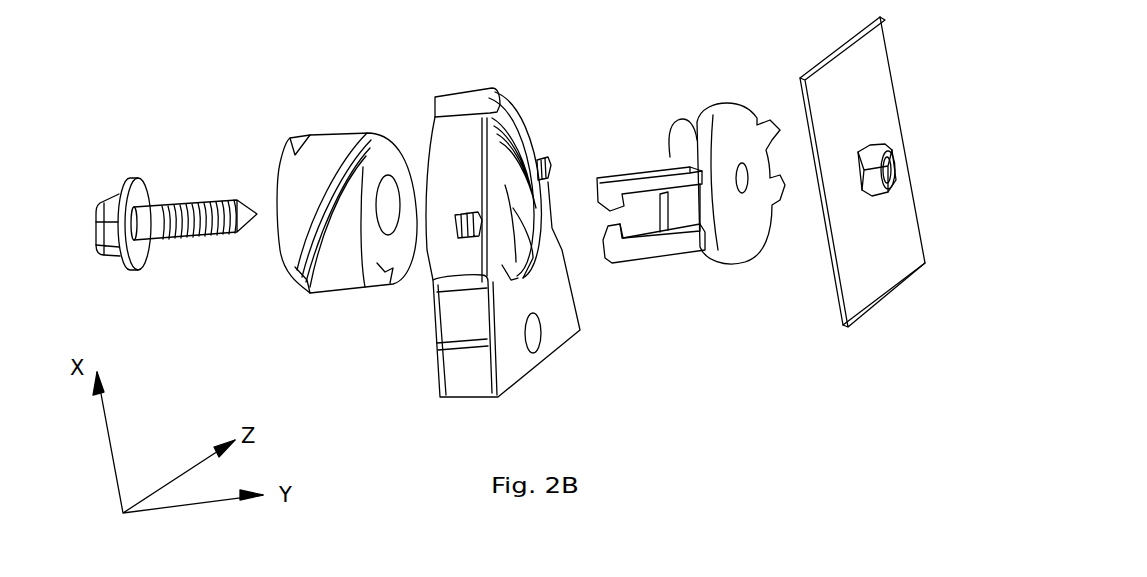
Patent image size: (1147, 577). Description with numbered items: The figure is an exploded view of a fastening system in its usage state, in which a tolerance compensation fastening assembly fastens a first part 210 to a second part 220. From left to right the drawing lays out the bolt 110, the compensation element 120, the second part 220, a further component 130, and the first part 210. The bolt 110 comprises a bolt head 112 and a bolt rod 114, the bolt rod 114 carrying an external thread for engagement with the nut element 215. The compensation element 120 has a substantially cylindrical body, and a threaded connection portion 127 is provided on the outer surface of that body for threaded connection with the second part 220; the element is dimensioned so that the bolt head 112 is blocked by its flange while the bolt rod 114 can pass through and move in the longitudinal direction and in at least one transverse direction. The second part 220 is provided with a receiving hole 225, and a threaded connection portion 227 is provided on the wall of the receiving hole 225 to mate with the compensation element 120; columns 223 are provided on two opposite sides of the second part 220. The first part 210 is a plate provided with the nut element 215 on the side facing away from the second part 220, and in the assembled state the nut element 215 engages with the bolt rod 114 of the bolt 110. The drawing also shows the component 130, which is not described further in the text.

The bolt 110 is at (179, 178).
The bolt head 112 is at (120, 192).
The bolt rod 114 is at (172, 162).
The compensation element 120 is at (331, 195).
The threaded connection portion 127 is at (300, 272).
The second part 220 is at (517, 220).
The columns 223 is at (567, 161).
The receiving hole 225 is at (540, 264).
The threaded connection portion 227 is at (525, 153).
The second clamp 130 is at (712, 98).
The first part 210 is at (893, 172).
The nut element 215 is at (900, 170).